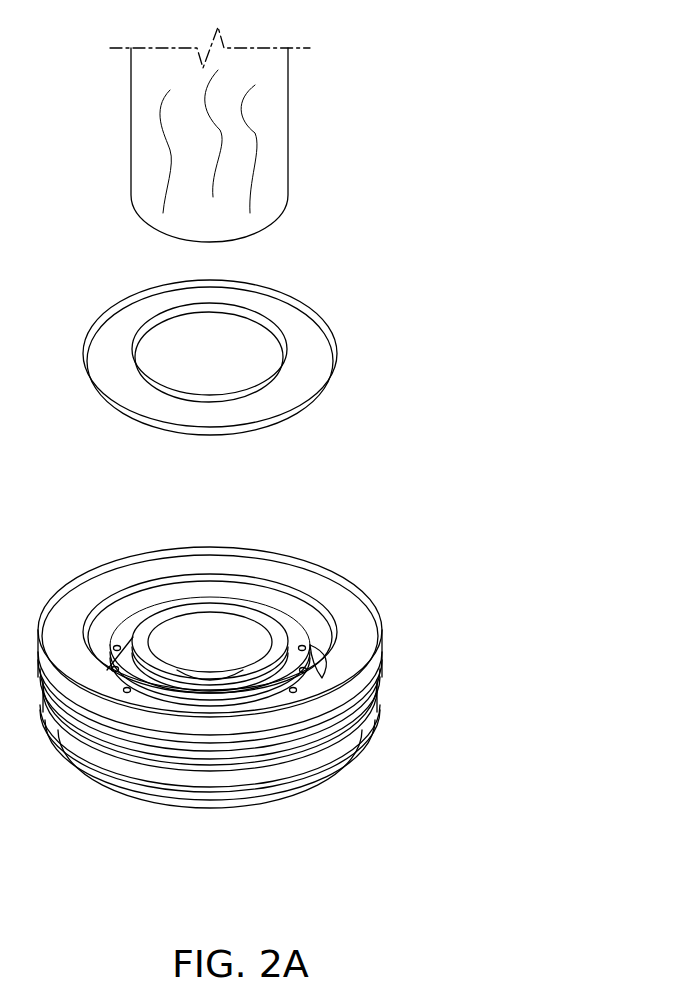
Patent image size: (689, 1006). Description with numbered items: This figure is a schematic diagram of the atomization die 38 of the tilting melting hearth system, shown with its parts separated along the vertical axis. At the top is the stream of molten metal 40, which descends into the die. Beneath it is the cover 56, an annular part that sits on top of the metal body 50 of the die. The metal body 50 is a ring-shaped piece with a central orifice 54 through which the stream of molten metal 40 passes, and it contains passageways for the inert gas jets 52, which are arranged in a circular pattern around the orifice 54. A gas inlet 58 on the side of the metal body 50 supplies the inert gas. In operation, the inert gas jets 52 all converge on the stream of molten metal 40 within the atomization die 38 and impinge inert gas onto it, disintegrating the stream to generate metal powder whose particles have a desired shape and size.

The atomization die 38 is at (460, 215).
The stream of molten metal 40 is at (280, 120).
The metal body 50 is at (245, 647).
The inert gas jets 52 is at (292, 643).
The orifice 54 is at (207, 642).
The cover 56 is at (328, 342).
The gas inlet 58 is at (382, 697).